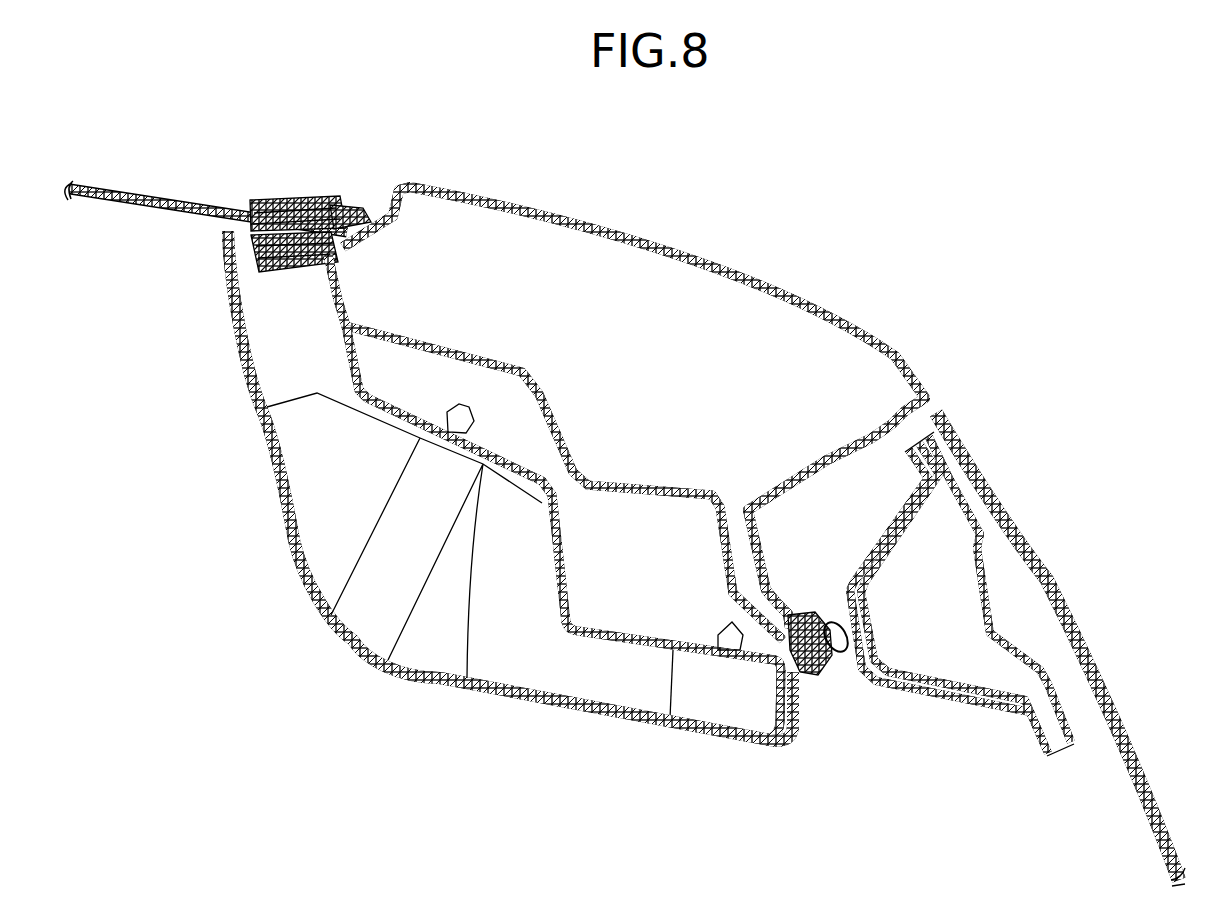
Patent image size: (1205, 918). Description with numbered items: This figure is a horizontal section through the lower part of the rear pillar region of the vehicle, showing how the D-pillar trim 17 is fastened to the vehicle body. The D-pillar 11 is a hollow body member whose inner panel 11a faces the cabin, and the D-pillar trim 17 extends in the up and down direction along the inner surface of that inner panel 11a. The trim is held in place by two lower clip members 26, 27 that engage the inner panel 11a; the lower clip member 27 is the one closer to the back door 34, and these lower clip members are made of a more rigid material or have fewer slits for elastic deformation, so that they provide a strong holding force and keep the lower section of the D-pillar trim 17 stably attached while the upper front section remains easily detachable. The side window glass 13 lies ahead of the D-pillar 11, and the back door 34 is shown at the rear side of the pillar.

The D-pillar 11 is at (745, 252).
The inner panel 11a is at (581, 636).
The side window glass 13 is at (112, 201).
The D-pillar trim 17 is at (285, 549).
The lower clip member 26 is at (457, 406).
The lower clip member 27 is at (721, 626).
The back door 34 is at (1065, 552).